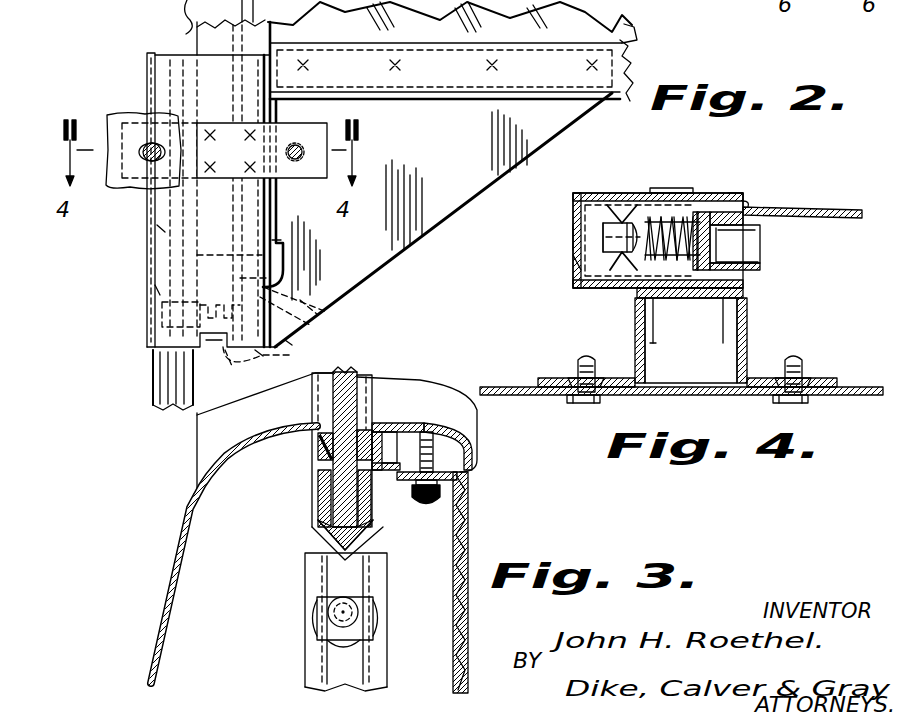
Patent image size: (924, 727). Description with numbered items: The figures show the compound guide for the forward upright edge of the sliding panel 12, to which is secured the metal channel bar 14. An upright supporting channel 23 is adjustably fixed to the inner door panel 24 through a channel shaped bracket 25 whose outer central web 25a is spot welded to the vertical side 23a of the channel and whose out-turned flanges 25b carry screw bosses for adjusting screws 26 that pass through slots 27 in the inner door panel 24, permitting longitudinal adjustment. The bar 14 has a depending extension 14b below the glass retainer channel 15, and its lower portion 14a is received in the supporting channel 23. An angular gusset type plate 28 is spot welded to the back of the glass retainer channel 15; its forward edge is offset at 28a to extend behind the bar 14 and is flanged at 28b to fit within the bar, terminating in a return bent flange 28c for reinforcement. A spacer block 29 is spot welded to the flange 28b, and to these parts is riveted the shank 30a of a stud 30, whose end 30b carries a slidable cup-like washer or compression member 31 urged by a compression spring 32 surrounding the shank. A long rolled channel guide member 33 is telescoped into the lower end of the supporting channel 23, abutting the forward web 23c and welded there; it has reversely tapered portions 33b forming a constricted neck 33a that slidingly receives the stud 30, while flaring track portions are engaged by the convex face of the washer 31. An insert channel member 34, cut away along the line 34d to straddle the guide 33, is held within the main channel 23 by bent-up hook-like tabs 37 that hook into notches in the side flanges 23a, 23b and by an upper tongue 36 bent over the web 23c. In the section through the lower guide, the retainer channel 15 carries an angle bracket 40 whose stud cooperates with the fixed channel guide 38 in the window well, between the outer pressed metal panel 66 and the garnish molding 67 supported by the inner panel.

In FIG. 3, the sliding panel 12 is at (352, 377).
In FIG. 4, the metal channel strip or bar 14 is at (757, 262).
In FIG. 4, the sash rail portion 14a is at (653, 343).
In FIG. 2, the depending extension 14b is at (278, 244).
In FIG. 2, the glass retainer channel 15 is at (636, 36).
In FIG. 3, the glass retainer channel 15 is at (327, 497).
In FIG. 2, the supporting channel 23 is at (175, 60).
In FIG. 4, the supporting channel 23 is at (597, 191).
In FIG. 4, the vertical side of the main channel 23a is at (608, 290).
In FIG. 4, the side flange of the channel 23b is at (733, 197).
In FIG. 4, the forward central vertical web 23c is at (572, 237).
In FIG. 4, the inner door or body panel 24 is at (858, 386).
In FIG. 3, the inner door or body panel 24 is at (456, 531).
In FIG. 2, the channel shaped bracket 25 is at (226, 118).
In FIG. 4, the channel shaped bracket 25 is at (748, 322).
In FIG. 4, the outer central web 25a is at (722, 300).
In FIG. 4, the out-turned flanges 25b is at (810, 378).
In FIG. 2, the adjusting screws 26 is at (158, 143).
In FIG. 4, the adjusting screws 26 is at (596, 403).
In FIG. 2, the slots 27 is at (142, 160).
In FIG. 4, the slots 27 is at (570, 390).
In FIG. 2, the angle bracket or angular gusset type plate 28 is at (420, 245).
In FIG. 4, the angle bracket or angular gusset type plate 28 is at (818, 208).
In FIG. 2, the offset or embossed portion 28a is at (278, 200).
In FIG. 4, the offset or embossed portion 28a is at (757, 232).
In FIG. 2, the flange 28b is at (318, 315).
In FIG. 4, the flange 28b is at (757, 248).
In FIG. 2, the return bent flange 28c is at (262, 353).
In FIG. 2, the spacer block or plate 29 is at (232, 366).
In FIG. 2, the stud 30 is at (148, 356).
In FIG. 4, the stud 30 is at (620, 226).
In FIG. 4, the shank 30a is at (688, 200).
In FIG. 2, the plunger end 30b is at (291, 343).
In FIG. 4, the conical washer or compression member 31 is at (653, 218).
In FIG. 4, the compression spring 32 is at (678, 189).
In FIG. 2, the guide member 33 is at (157, 394).
In FIG. 4, the guide member 33 is at (575, 262).
In FIG. 4, the constricted neck 33a is at (620, 290).
In FIG. 2, the lining portion 33b is at (160, 228).
In FIG. 4, the insert channel member 34 is at (653, 300).
In FIG. 2, the cut-away line 34d is at (157, 290).
In FIG. 2, the upper tongue or tab 36 is at (146, 53).
In FIG. 2, the bent-up hook-like tabs 37 is at (220, 349).
In FIG. 3, the fixed guide member 38 is at (317, 660).
In FIG. 3, the angle bracket 40 is at (336, 579).
In FIG. 3, the outer pressed metal panel 66 is at (168, 582).
In FIG. 3, the garnish molding 67 is at (418, 428).